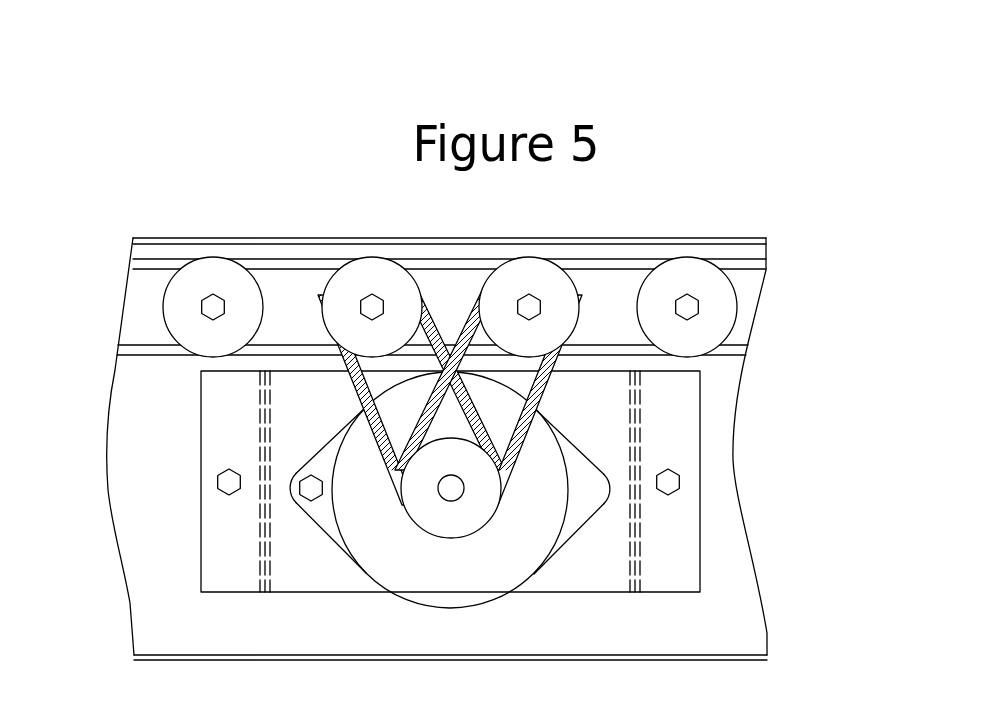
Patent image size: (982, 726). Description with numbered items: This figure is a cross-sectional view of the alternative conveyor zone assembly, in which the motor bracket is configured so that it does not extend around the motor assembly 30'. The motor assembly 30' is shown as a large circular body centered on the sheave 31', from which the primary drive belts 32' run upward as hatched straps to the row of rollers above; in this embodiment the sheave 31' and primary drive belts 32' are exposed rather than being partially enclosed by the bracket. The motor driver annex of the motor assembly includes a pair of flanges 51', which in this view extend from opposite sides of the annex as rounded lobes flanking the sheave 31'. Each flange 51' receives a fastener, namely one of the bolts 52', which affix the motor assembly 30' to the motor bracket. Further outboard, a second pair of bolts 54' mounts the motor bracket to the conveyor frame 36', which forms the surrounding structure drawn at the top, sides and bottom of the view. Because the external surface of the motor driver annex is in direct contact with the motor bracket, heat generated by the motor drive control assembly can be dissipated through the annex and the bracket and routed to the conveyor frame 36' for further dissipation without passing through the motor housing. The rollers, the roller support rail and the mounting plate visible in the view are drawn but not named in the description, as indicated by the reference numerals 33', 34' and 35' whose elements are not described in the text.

The motor assembly 30' is at (593, 490).
The sheave 31' is at (628, 465).
The primary drive belts 32' is at (497, 395).
The rail 33' is at (437, 413).
The mounting plate 34' is at (528, 481).
The pulley 35' is at (479, 264).
The conveyor frame 36' is at (494, 620).
The flanges 51' is at (460, 526).
The bolts 52' is at (360, 557).
The bolts 54' is at (361, 550).